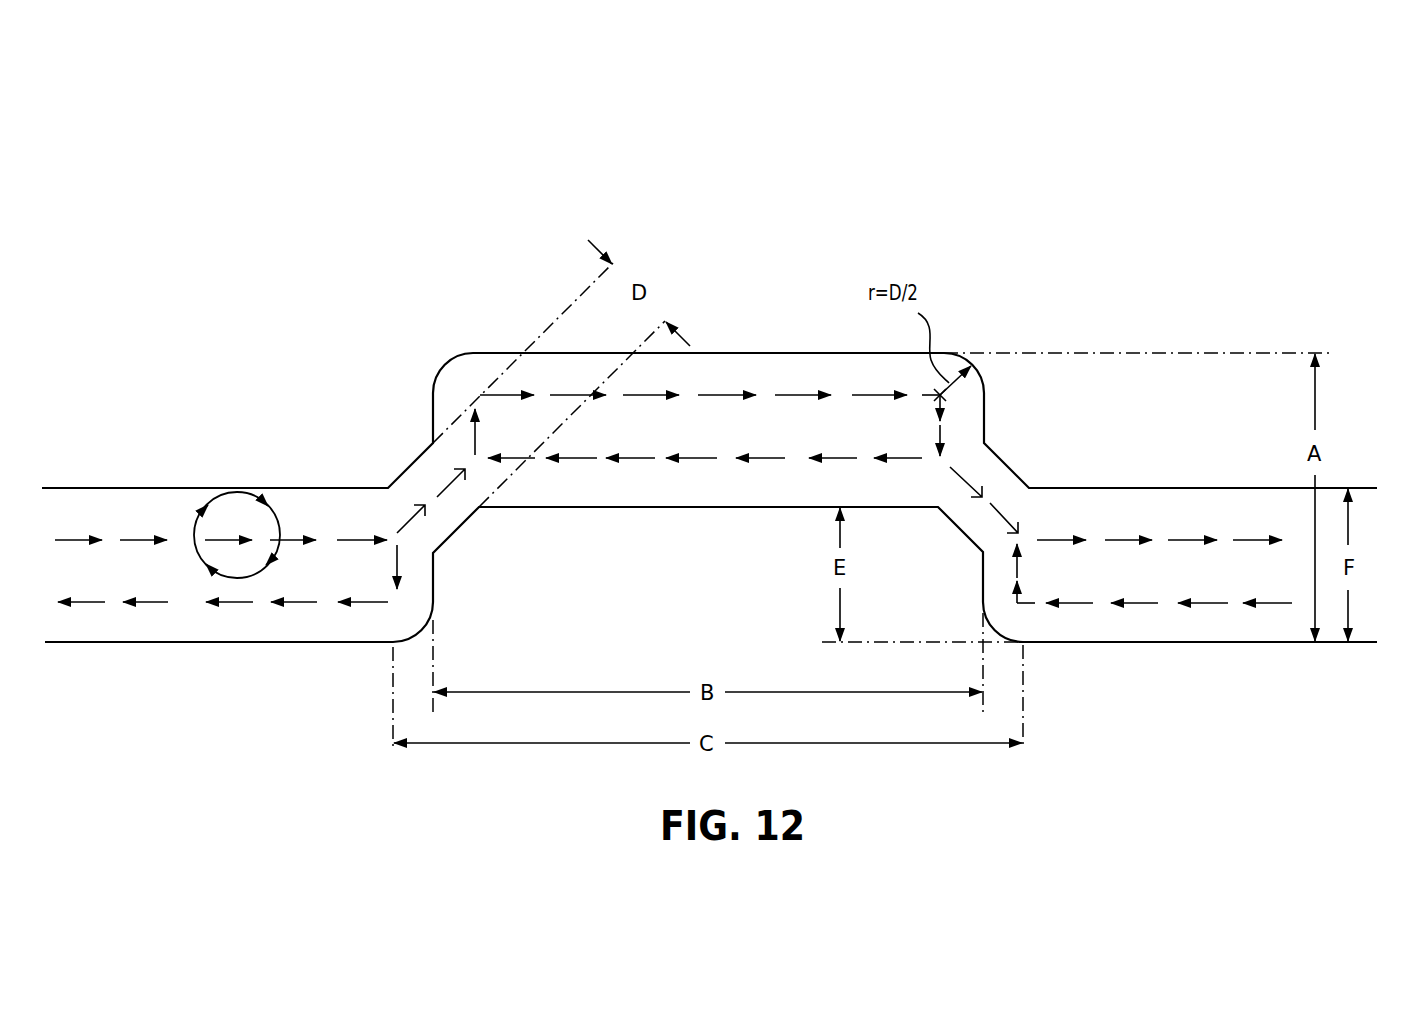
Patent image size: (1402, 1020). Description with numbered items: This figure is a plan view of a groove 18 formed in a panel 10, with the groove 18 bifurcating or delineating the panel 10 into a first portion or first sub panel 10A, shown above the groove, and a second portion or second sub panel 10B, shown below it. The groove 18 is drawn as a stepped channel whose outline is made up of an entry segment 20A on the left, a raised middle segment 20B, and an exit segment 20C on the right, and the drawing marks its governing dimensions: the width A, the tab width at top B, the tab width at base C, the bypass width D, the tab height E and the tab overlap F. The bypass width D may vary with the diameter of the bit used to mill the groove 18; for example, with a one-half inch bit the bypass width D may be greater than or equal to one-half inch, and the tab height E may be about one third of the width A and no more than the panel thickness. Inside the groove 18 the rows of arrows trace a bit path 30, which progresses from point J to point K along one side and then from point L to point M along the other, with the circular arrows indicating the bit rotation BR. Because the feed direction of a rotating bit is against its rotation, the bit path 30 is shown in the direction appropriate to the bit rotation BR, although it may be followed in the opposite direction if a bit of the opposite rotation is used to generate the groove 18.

The panel 10 is at (683, 122).
The first sub panel 10A is at (306, 193).
The second sub panel 10B is at (294, 792).
The inlet channel segment 20A is at (216, 418).
The raised middle channel segment 20B is at (713, 602).
The outlet channel segment 20C is at (1197, 423).
The bit path 30 is at (135, 532).
The groove 18 is at (1118, 572).
The bit rotation BR is at (237, 578).
The point J is at (33, 541).
The point K is at (1172, 541).
The point L is at (1298, 604).
The point M is at (207, 603).